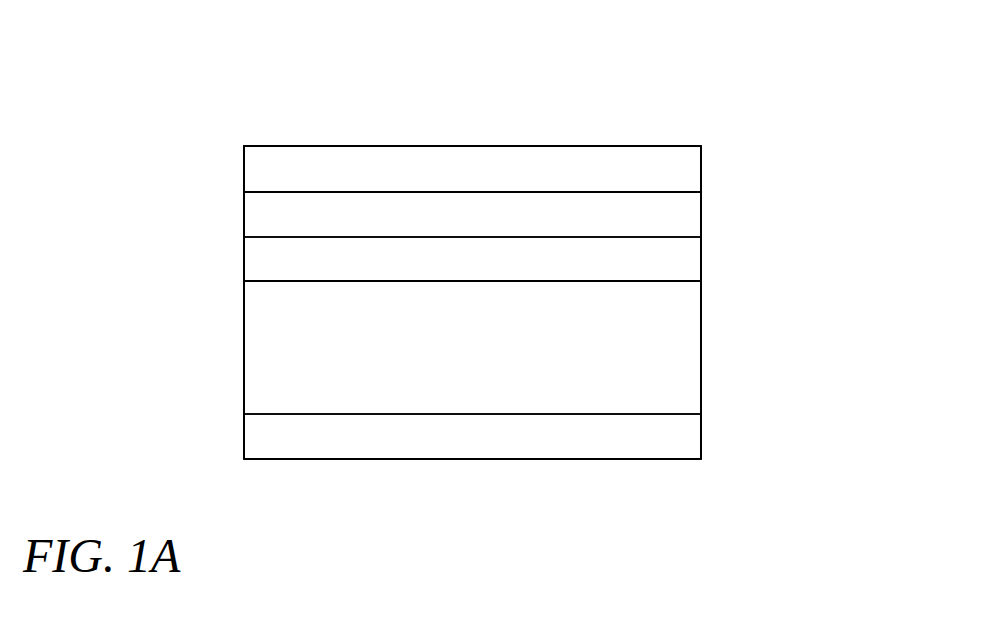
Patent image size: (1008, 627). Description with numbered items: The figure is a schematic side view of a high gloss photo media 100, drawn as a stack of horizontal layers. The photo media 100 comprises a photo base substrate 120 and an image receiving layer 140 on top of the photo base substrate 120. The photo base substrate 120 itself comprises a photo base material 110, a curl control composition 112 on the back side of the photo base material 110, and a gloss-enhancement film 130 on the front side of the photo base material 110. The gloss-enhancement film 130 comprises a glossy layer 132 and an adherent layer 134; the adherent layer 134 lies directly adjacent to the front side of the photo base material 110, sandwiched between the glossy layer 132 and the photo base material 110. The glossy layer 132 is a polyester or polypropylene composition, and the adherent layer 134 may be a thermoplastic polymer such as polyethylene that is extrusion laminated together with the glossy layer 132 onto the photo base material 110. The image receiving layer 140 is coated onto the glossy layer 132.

The photo media 100 is at (742, 45).
The photo base material 110 is at (701, 348).
The curl control composition 112 is at (701, 435).
The photo base substrate 120 is at (232, 193).
The gloss-enhancement film 130 is at (818, 192).
The glossy layer 132 is at (701, 213).
The adherent layer 134 is at (701, 257).
The image receiving layer 140 is at (701, 170).